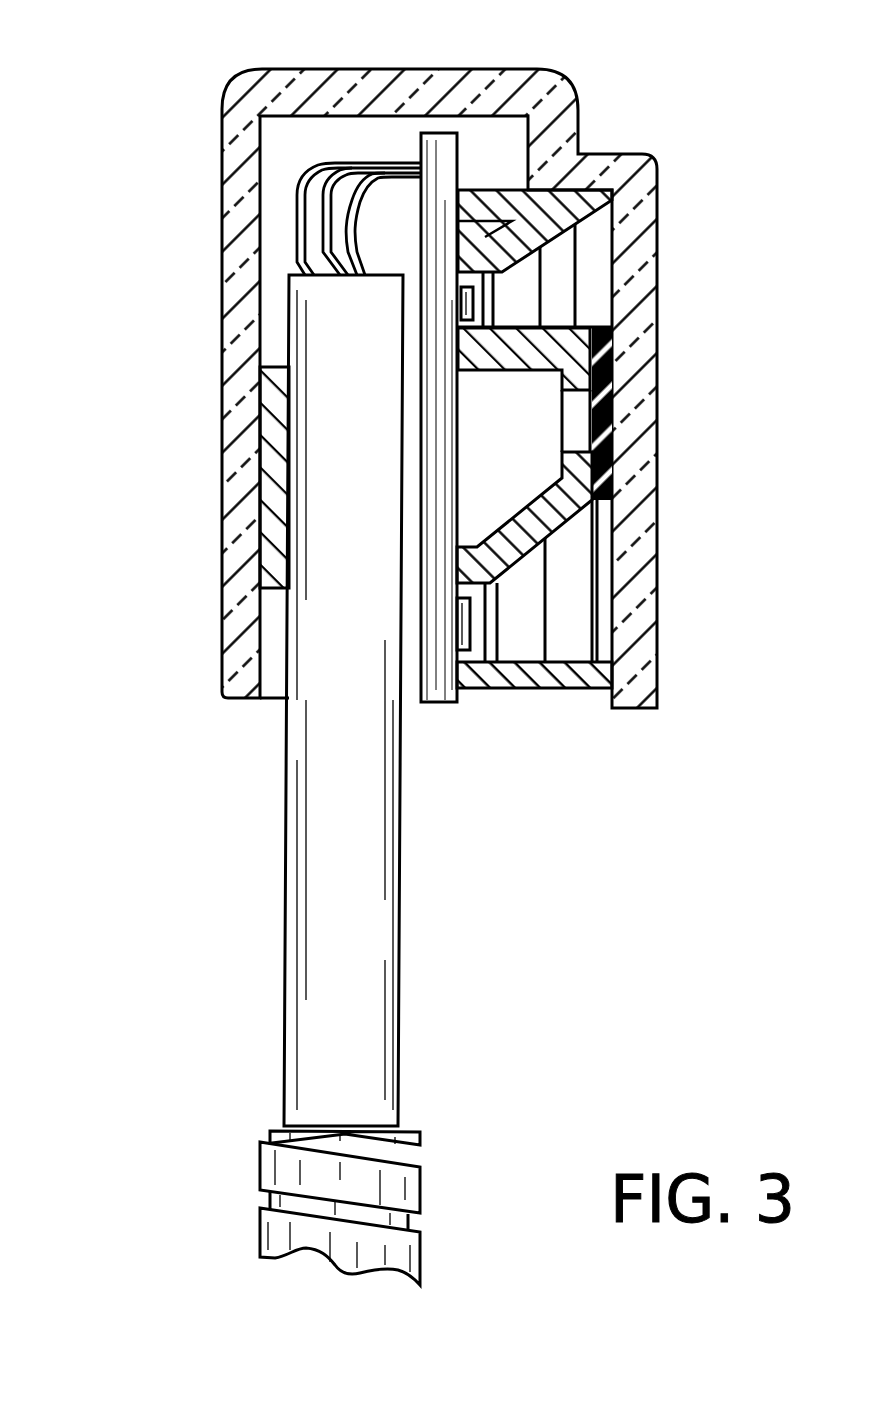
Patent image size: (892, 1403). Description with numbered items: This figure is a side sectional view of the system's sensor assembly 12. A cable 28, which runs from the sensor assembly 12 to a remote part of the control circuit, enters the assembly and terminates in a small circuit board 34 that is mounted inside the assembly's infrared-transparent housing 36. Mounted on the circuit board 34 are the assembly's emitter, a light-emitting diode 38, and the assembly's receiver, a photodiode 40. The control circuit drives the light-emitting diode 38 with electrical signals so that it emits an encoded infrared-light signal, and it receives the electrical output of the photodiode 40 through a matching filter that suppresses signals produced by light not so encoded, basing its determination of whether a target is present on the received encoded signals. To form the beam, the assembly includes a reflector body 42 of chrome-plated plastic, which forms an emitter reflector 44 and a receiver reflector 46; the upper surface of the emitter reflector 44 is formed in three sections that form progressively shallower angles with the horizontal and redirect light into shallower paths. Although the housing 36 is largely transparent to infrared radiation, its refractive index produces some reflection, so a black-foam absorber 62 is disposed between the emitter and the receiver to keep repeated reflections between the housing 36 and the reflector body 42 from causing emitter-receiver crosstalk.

The sensor assembly 12 is at (166, 368).
The cable 28 is at (401, 873).
The circuit board 34 is at (436, 133).
The infrared-transparent housing 36 is at (222, 612).
The light-emitting diode 38 is at (474, 307).
The photodiode 40 is at (458, 632).
The reflector body 42 is at (527, 724).
The emitter reflector 44 is at (706, 259).
The receiver reflector 46 is at (696, 578).
The black-foam absorber 62 is at (604, 384).